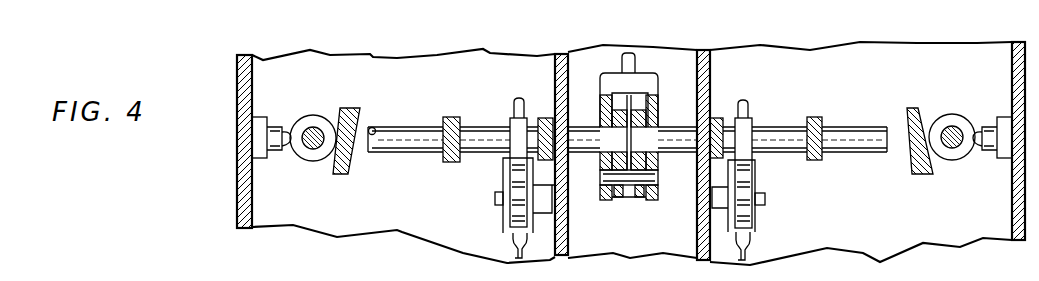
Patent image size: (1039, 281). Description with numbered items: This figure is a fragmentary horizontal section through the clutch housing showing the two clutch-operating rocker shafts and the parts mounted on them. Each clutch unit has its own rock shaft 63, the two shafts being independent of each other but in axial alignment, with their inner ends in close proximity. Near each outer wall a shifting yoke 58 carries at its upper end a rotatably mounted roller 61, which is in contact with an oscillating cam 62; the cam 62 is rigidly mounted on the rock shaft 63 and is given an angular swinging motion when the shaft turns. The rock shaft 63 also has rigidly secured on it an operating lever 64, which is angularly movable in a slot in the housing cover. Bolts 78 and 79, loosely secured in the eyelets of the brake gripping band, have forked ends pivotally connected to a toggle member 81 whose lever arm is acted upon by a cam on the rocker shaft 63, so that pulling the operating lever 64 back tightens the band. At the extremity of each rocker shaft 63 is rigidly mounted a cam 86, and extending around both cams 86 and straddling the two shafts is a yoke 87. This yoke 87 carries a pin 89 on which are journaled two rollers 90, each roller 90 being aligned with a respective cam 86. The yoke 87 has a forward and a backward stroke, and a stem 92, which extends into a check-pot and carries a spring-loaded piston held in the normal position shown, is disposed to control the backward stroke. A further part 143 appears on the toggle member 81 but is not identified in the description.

The shifting yoke 58 is at (314, 149).
The roller 61 is at (323, 116).
The oscillating cam 62 is at (358, 110).
The rock shaft 63 is at (407, 132).
The operating lever 64 is at (460, 130).
The bolt 78 is at (526, 104).
The bolt 79 is at (530, 244).
The toggle member 81 is at (512, 196).
The cam 86 is at (605, 118).
The yoke 87 is at (659, 81).
The pin 89 is at (659, 183).
The roller 90 is at (622, 200).
The stem 92 is at (637, 60).
The stud 143 is at (495, 201).